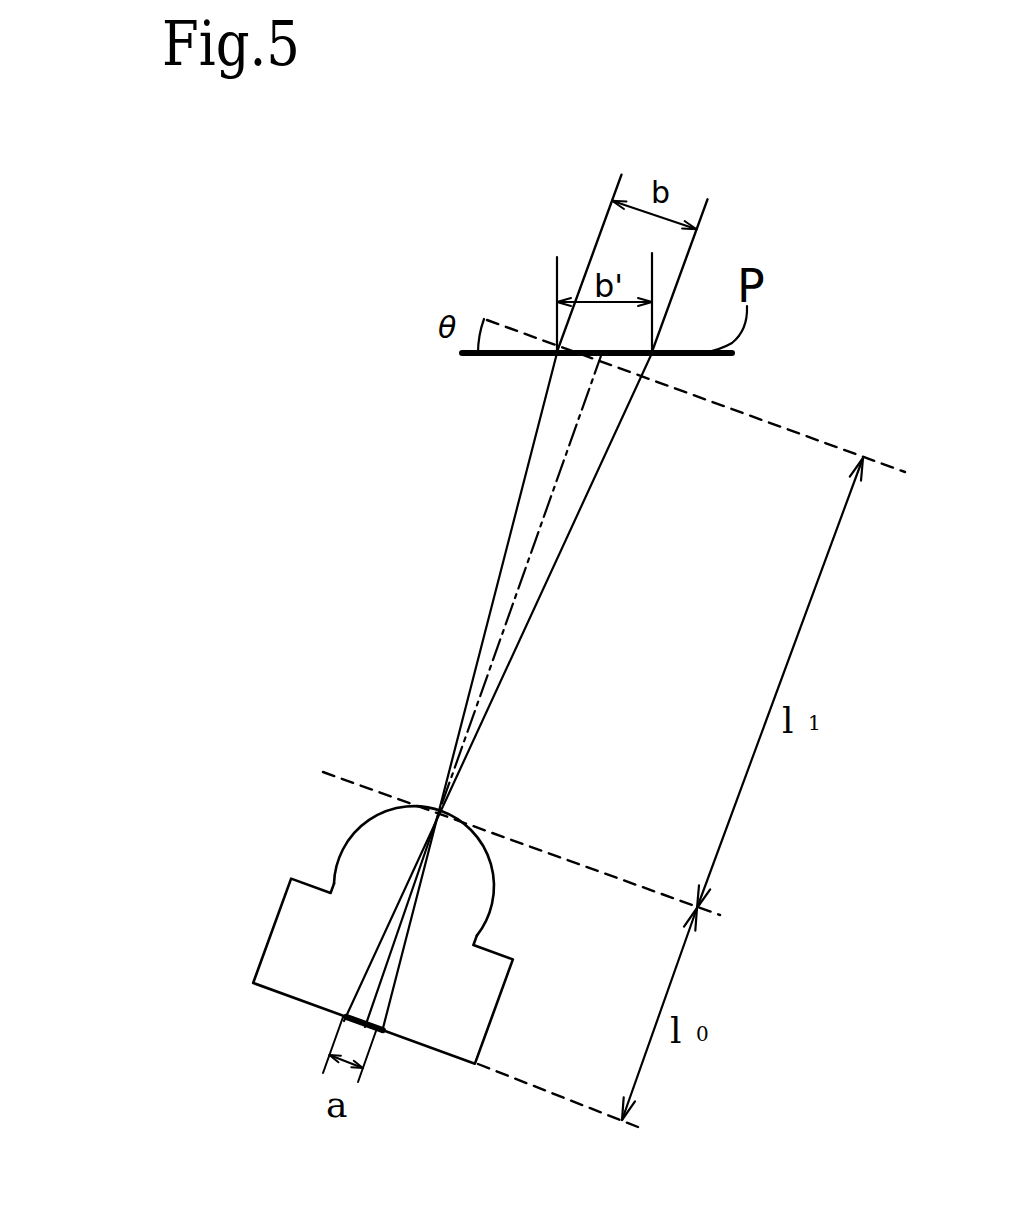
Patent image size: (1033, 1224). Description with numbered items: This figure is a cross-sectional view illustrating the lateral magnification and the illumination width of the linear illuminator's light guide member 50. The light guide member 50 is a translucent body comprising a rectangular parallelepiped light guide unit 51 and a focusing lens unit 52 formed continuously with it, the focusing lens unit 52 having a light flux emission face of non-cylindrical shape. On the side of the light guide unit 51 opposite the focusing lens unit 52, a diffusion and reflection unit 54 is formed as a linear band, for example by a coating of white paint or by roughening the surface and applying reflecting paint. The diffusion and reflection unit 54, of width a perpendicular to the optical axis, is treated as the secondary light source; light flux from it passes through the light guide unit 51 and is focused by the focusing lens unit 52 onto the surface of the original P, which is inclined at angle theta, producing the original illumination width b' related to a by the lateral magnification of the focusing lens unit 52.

The light guide member 50 is at (148, 810).
The light guide unit 51 is at (290, 940).
The focusing lens unit 52 is at (365, 848).
The diffusion and reflection unit 54 is at (357, 1028).